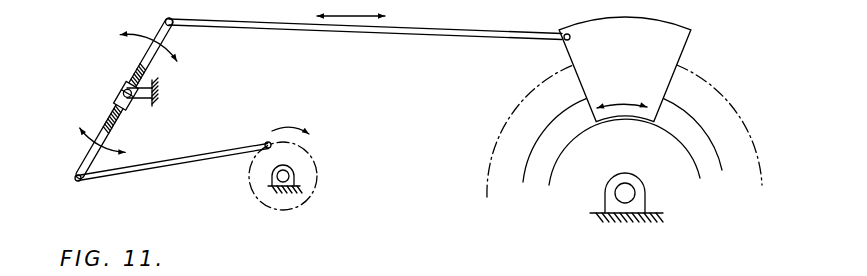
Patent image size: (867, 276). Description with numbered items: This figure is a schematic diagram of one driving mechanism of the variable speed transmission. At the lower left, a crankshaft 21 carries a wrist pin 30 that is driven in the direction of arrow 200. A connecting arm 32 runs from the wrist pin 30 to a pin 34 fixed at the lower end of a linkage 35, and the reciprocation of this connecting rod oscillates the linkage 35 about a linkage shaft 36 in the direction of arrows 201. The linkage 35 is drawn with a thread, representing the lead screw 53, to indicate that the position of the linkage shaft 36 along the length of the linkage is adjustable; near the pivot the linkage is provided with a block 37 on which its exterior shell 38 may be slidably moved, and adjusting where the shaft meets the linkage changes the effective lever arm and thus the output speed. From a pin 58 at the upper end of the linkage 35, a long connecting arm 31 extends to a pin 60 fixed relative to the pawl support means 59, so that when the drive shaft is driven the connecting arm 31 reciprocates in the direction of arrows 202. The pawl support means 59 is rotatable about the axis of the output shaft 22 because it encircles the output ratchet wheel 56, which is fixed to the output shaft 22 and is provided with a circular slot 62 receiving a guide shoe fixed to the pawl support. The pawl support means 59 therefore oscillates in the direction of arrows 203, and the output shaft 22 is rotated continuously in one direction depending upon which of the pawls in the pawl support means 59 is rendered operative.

The crankshaft 21 is at (317, 173).
The output shaft 22 is at (613, 192).
The wrist pin 30 is at (267, 142).
The connecting arm 31 is at (487, 36).
The connecting arm 32 is at (190, 159).
The pin 34 is at (75, 180).
The linkage 35 is at (152, 58).
The linkage shaft 36 is at (130, 104).
The block 37 is at (117, 91).
The exterior shell 38 is at (155, 100).
The lead screw 53 is at (106, 110).
The output ratchet wheel 56 is at (717, 95).
The pin 58 is at (173, 25).
The pawl support means 59 is at (689, 30).
The pin 60 is at (571, 38).
The circular slot 62 is at (697, 139).
The arrow 200 is at (297, 121).
The arrows 201 is at (148, 36).
The arrows 202 is at (372, 16).
The arrows 203 is at (623, 107).